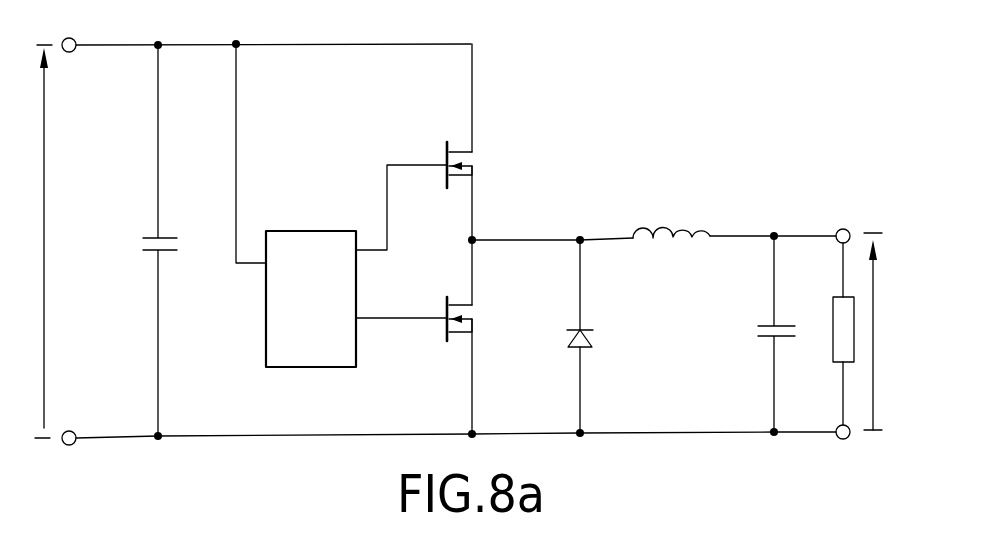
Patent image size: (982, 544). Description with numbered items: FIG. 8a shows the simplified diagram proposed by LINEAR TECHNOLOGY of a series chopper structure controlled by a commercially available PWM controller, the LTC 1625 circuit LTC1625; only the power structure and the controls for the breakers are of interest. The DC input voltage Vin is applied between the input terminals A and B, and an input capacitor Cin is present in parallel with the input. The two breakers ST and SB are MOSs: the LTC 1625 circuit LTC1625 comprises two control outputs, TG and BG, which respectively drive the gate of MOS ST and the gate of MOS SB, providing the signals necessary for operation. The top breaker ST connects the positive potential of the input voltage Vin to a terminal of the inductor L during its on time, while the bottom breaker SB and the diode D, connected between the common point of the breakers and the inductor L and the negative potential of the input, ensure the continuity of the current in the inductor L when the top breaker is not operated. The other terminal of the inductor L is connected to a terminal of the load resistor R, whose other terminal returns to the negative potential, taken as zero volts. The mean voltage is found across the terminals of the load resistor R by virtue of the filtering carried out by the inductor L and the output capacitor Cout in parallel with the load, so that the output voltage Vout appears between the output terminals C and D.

The input terminal A is at (68, 37).
The input terminal B is at (72, 446).
The output terminal C is at (840, 229).
The diode D is at (575, 344).
The DC input voltage Vin is at (55, 241).
The output voltage Vout is at (890, 331).
The input capacitor Cin is at (143, 243).
The output capacitor Cout is at (758, 331).
The LTC 1625 circuit LTC1625 is at (341, 205).
The MOS breaker ST is at (454, 189).
The MOS breaker SB is at (454, 341).
The inductor L is at (672, 226).
The load resistor R is at (833, 337).